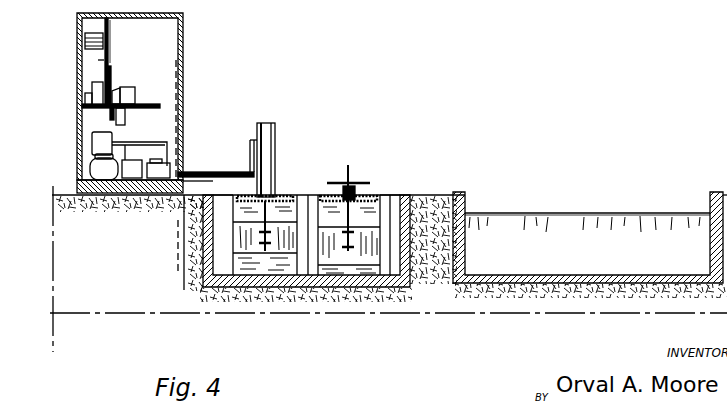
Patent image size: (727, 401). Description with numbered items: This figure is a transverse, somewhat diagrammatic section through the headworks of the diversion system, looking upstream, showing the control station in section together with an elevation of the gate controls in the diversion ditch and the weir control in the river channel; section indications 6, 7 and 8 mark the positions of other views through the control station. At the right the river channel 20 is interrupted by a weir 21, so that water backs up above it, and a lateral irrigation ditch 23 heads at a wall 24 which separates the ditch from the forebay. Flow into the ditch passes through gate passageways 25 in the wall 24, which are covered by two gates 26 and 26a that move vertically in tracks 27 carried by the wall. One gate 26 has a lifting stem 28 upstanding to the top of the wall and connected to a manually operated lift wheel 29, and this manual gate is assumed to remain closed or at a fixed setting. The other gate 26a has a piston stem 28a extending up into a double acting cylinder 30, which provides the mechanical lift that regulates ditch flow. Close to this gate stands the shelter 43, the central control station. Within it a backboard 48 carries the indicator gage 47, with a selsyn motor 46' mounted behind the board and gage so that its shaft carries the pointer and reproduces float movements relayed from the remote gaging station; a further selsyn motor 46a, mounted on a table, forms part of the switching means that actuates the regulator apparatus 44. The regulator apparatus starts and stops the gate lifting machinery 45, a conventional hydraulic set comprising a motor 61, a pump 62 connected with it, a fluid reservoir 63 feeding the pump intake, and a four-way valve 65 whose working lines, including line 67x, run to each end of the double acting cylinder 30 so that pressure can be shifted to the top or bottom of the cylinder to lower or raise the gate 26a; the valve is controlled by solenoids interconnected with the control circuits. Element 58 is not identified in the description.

The river channel 20 is at (553, 201).
The weir 21 is at (584, 231).
The irrigation ditch 23 is at (307, 278).
The wall 24 is at (220, 257).
The gate passageways 25 is at (258, 275).
The gate 26 is at (359, 236).
The gate 26a is at (282, 226).
The tracks 27 is at (306, 198).
The lifting stem 28 is at (349, 165).
The piston stem 28a is at (258, 212).
The lift wheel 29 is at (362, 186).
The double acting cylinder 30 is at (266, 142).
The shelter 43 is at (71, 26).
The regulator apparatus 44 is at (96, 69).
The gate lifting machinery 45 is at (97, 155).
The selsyn motor 46' is at (75, 44).
The selsyn motor 46a is at (97, 95).
The indicator gage 47 is at (109, 28).
The backboard 48 is at (98, 60).
The motor 58 is at (134, 95).
The motor 61 is at (95, 168).
The pump 62 is at (127, 167).
The fluid reservoir 63 is at (107, 142).
The four-way valve 65 is at (182, 173).
The working line 67x is at (250, 141).
The section line 6 is at (173, 73).
The section line 7 is at (123, 39).
The section line 8 is at (217, 95).